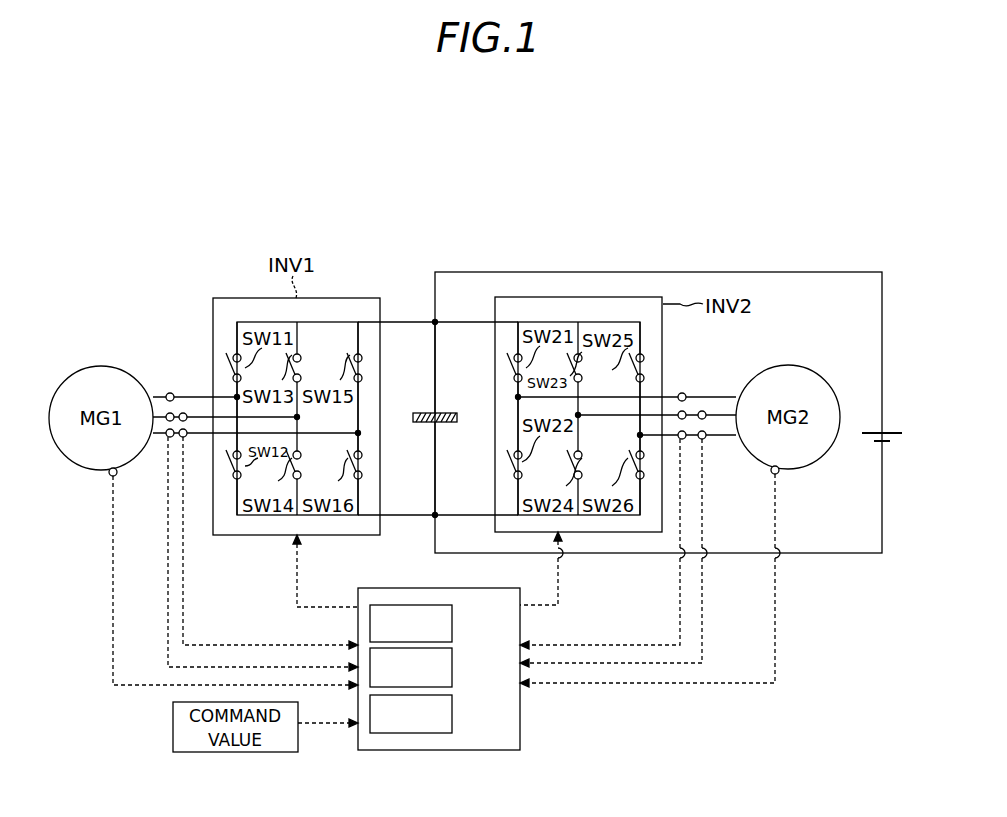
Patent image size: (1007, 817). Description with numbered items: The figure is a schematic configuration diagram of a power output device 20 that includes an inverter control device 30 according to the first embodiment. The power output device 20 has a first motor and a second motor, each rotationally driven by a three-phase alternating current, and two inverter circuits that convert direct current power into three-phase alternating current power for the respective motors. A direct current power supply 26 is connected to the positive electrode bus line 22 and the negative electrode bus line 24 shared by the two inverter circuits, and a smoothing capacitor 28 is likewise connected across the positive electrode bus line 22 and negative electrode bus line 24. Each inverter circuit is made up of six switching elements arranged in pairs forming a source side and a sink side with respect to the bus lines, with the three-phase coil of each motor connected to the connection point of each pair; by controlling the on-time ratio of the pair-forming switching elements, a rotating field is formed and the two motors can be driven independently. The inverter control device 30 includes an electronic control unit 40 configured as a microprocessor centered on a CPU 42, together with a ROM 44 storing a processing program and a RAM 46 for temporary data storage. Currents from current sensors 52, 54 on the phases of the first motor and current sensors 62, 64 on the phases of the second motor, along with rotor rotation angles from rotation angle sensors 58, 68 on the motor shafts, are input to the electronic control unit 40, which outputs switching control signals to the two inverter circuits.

The power output device 20 is at (812, 262).
The positive electrode bus line 22 is at (399, 322).
The negative electrode bus line 24 is at (399, 515).
The direct current power supply 26 is at (897, 432).
The smoothing capacitor 28 is at (448, 411).
The inverter control device 30 is at (616, 722).
The electronic control unit 40 is at (472, 669).
The CPU 42 is at (454, 621).
The ROM 44 is at (454, 666).
The RAM 46 is at (454, 712).
The current sensor 52 is at (170, 393).
The current sensor 54 is at (185, 413).
The rotation angle sensor 58 is at (110, 476).
The current sensor 62 is at (681, 393).
The current sensor 64 is at (704, 411).
The rotation angle sensor 68 is at (779, 472).